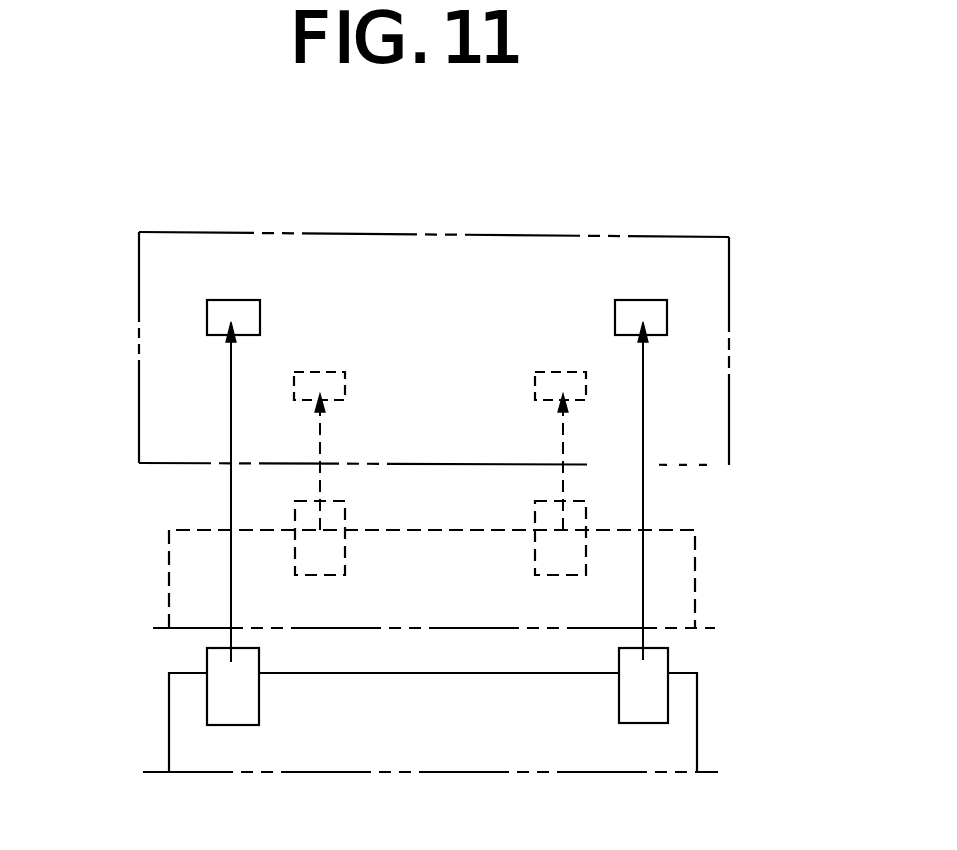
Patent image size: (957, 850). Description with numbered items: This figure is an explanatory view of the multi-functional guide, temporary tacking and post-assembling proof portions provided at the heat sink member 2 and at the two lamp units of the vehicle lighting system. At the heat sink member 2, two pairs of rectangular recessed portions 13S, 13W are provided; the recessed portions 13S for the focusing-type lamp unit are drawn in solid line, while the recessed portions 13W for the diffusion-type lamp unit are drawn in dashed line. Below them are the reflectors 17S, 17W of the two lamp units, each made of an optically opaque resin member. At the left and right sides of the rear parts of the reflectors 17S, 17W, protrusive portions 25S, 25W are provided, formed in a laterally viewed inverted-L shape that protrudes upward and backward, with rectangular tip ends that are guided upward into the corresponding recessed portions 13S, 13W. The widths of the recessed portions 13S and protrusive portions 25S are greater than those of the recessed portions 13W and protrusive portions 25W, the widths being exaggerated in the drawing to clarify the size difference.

The heat sink member 2 is at (706, 238).
The recessed portion 13S is at (216, 320).
The recessed portion 13W is at (328, 378).
The protrusive portion 25W is at (300, 514).
The reflector 17W is at (169, 539).
The reflector 17S is at (168, 691).
The protrusive portion 25S is at (215, 703).